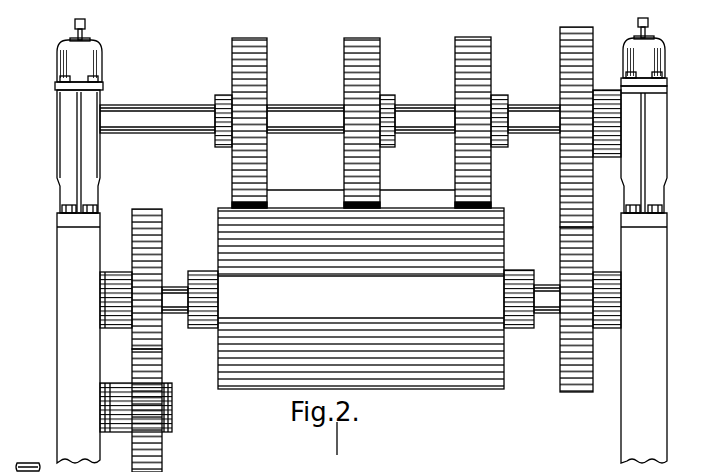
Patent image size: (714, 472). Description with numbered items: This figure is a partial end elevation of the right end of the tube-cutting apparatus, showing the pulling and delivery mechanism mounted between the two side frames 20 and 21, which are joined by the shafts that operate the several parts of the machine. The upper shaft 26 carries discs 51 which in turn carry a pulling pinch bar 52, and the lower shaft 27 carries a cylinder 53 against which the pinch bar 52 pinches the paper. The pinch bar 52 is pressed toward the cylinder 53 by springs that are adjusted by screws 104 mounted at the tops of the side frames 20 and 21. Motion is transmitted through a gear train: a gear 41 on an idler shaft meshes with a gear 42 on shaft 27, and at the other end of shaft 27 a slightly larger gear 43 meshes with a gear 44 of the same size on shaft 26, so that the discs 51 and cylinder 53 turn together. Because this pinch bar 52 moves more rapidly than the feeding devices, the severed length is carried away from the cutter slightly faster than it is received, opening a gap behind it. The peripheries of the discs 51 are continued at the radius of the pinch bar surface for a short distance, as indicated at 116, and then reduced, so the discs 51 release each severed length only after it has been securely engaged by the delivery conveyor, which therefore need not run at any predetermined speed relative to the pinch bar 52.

The side frame 20 is at (64, 314).
The side frame 21 is at (662, 343).
The shaft 26 is at (155, 113).
The shaft 27 is at (550, 313).
The gear 41 is at (160, 437).
The gear 42 is at (158, 234).
The gear 43 is at (572, 388).
The gear 44 is at (573, 181).
The discs 51 is at (260, 84).
The pulling pinch bar 52 is at (290, 200).
The cylinder 53 is at (449, 378).
The screws 104 is at (72, 23).
The extended periphery portion of discs 116 is at (237, 194).